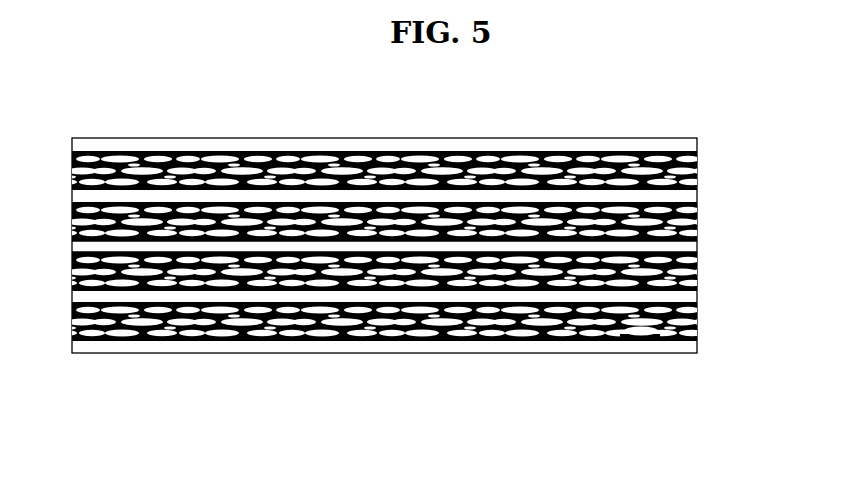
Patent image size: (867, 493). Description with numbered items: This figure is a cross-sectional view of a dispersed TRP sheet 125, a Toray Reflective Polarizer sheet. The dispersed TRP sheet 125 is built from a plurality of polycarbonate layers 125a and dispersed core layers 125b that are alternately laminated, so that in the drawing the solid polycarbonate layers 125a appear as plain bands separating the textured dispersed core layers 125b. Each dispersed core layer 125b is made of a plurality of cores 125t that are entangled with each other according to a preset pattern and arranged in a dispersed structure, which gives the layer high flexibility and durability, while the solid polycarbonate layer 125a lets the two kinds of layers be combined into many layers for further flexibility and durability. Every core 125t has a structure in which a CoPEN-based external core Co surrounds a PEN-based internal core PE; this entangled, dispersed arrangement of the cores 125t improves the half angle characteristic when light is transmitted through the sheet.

The dispersed TRP sheet 125 is at (431, 259).
The polycarbonate layer 125a is at (693, 245).
The dispersed core layer 125b is at (692, 219).
The core 125t is at (384, 384).
The CoPEN-based external core Co is at (637, 340).
The PEN-based internal core PE is at (643, 333).